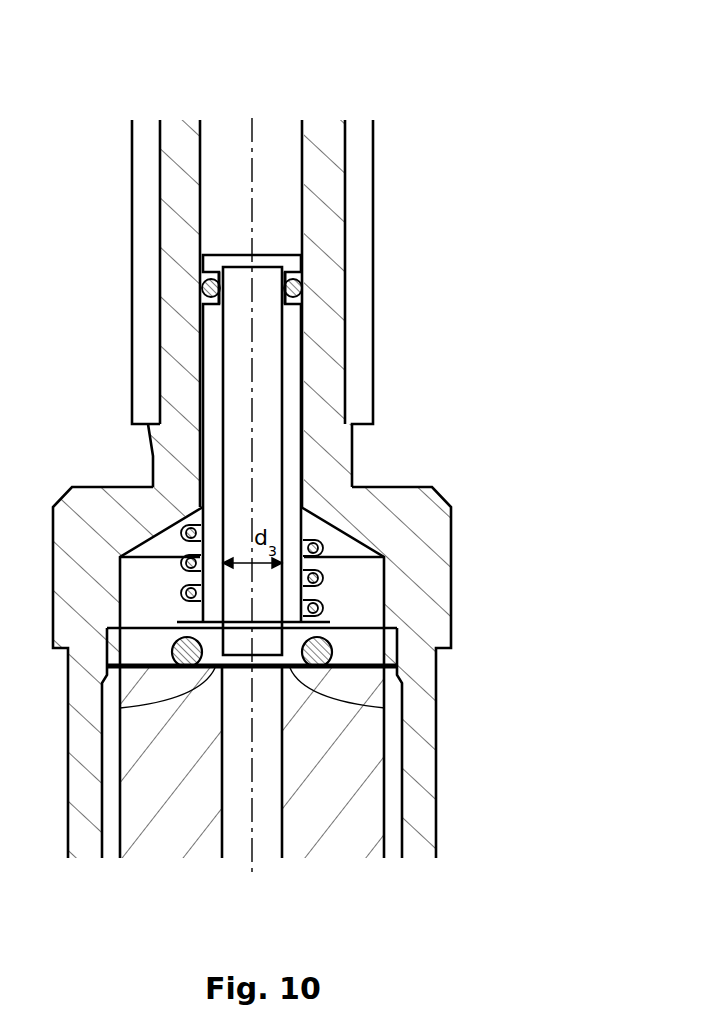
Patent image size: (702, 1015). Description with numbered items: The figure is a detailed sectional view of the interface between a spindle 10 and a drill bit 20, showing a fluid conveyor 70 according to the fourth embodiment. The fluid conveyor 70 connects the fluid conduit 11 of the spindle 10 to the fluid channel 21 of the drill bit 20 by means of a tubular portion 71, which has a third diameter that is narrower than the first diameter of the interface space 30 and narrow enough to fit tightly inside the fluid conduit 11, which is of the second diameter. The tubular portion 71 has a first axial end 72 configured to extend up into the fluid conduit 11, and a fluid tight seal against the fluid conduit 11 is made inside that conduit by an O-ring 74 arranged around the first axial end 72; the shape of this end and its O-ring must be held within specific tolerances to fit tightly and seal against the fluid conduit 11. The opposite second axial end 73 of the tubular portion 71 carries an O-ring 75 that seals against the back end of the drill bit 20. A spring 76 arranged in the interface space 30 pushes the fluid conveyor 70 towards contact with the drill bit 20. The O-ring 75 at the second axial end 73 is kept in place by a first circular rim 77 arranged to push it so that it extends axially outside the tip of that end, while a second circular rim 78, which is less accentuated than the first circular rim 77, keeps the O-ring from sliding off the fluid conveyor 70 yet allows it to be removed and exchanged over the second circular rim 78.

The spindle 10 is at (328, 200).
The fluid conduit 11 is at (292, 139).
The drill bit 20 is at (340, 773).
The fluid channel 21 is at (263, 828).
The interface space 30 is at (353, 608).
The fluid conveyor 70 is at (292, 400).
The tubular portion 71 is at (270, 447).
The first axial end 72 is at (300, 257).
The second axial end 73 is at (297, 693).
The O-ring 74 is at (303, 292).
The O-ring 75 is at (330, 658).
The spring 76 is at (320, 578).
The first circular rim 77 is at (180, 637).
The second circular rim 78 is at (120, 707).